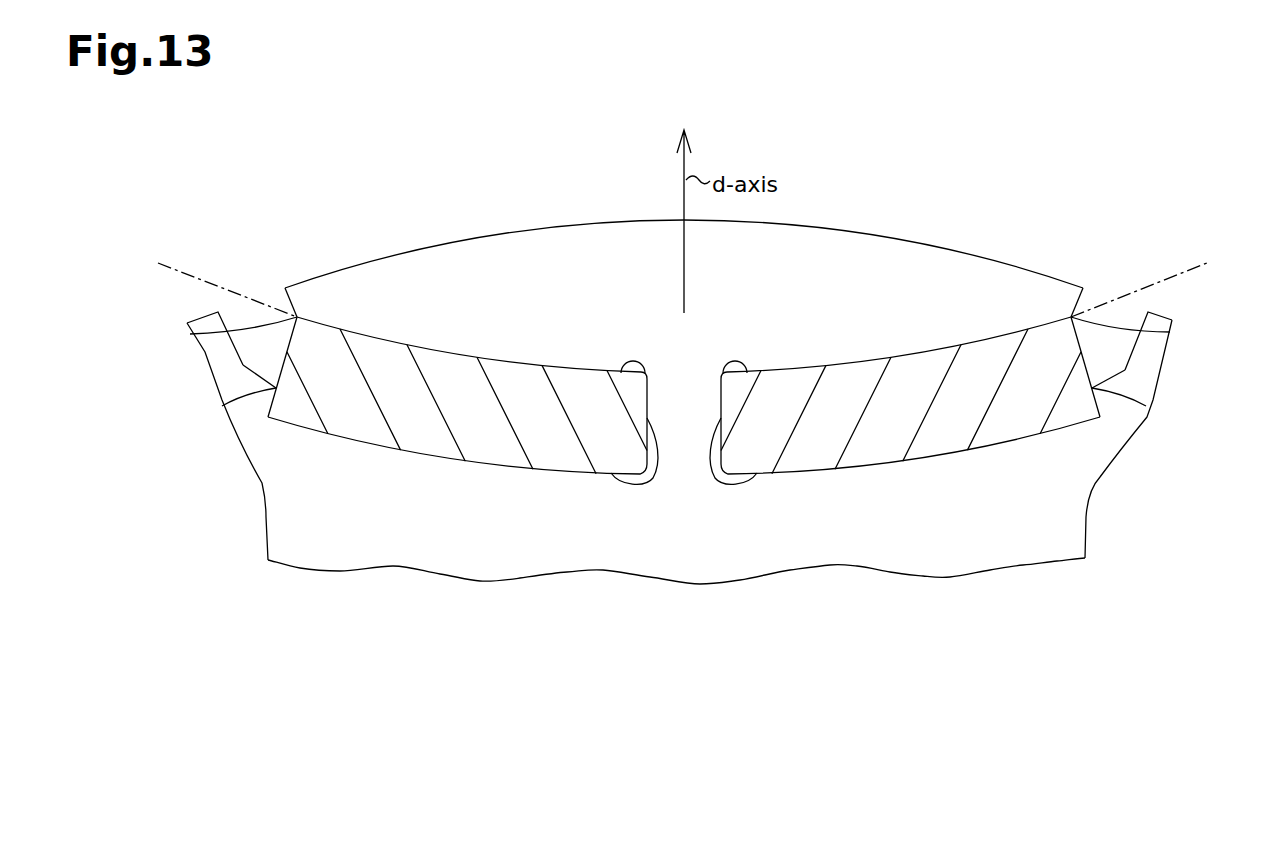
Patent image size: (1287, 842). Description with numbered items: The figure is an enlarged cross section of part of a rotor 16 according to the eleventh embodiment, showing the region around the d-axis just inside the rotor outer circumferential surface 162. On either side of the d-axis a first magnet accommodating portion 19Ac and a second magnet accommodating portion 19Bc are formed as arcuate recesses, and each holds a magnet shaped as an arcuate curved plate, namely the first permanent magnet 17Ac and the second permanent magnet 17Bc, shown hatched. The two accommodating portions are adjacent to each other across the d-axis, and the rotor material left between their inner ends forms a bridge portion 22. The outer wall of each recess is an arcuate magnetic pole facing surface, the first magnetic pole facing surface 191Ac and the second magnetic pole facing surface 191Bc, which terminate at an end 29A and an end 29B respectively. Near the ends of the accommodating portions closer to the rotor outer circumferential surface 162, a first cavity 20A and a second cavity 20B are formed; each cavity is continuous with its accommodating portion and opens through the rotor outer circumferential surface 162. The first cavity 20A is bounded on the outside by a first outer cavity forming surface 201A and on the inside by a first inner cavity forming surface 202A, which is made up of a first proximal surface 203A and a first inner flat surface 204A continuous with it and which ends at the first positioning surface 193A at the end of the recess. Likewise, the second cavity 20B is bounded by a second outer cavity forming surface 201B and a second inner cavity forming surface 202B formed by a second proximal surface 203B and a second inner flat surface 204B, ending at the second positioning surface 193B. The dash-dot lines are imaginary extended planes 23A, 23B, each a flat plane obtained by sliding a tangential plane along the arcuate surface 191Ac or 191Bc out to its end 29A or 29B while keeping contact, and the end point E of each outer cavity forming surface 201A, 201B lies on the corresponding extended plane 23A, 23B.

The rotor core 16 is at (874, 246).
The rotor outer circumferential surface 162 is at (817, 206).
The first outer cavity forming surface 201A is at (292, 290).
The second outer cavity forming surface 201B is at (1076, 290).
The imaginary extended plane of the first magnetic pole facing surface 23A is at (197, 280).
The imaginary extended plane of the second magnetic pole facing surface 23B is at (1171, 280).
The intersection point E is at (262, 292).
The end of the first magnetic pole facing surface 29A is at (202, 334).
The end of the second magnetic pole facing surface 29B is at (1166, 334).
The first cavity 20A is at (232, 316).
The second cavity 20B is at (1136, 316).
The first inner flat surface 204A is at (243, 366).
The second inner flat surface 204B is at (1125, 366).
The first proximal surface 203A is at (222, 406).
The second proximal surface 203B is at (1146, 406).
The first inner cavity forming surface 202A is at (126, 372).
The second inner cavity forming surface 202B is at (1242, 372).
The first positioning surface 193A is at (282, 410).
The second positioning surface 193B is at (1086, 410).
The arcuate first magnetic pole facing surface 191Ac is at (460, 360).
The arcuate second magnetic pole facing surface 191Bc is at (908, 360).
The first magnet accommodating portion 19Ac is at (436, 446).
The second magnet accommodating portion 19Bc is at (932, 446).
The first permanent magnet 17Ac is at (557, 454).
The second permanent magnet 17Bc is at (811, 454).
The bridge portion 22 is at (683, 444).